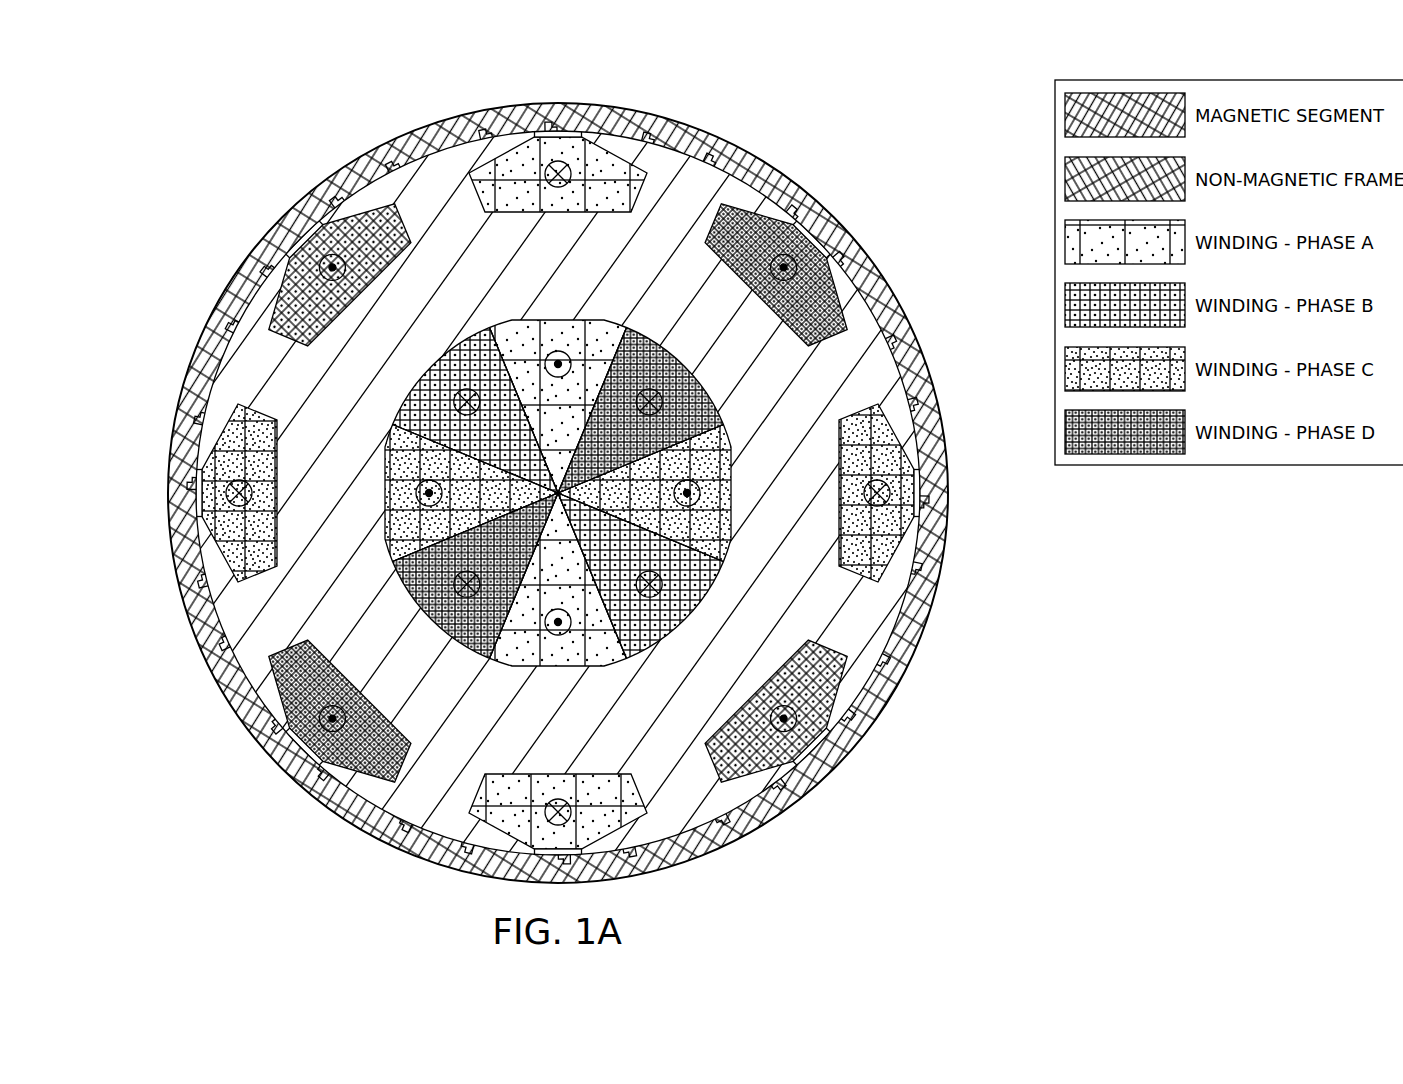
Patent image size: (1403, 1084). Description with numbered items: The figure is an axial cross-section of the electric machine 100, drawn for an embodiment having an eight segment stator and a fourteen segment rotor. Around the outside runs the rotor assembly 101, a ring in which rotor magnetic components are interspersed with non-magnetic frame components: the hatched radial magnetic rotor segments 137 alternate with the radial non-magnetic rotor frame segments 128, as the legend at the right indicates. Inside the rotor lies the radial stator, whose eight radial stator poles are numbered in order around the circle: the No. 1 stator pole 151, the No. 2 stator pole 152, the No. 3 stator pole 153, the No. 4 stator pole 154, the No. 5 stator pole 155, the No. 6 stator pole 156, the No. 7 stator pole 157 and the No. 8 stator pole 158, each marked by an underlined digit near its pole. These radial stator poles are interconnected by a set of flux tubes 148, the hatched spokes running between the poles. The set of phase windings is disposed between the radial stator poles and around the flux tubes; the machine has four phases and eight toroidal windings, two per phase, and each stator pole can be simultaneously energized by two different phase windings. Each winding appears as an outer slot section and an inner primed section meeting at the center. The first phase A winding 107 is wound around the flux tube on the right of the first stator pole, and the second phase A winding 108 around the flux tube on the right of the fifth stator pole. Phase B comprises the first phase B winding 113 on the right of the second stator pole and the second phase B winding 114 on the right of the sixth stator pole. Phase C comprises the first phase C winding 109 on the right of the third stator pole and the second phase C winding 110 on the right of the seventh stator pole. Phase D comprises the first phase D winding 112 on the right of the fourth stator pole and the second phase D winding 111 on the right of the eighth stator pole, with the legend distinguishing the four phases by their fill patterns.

The electric machine 100 is at (300, 80).
The rotor assembly 101 is at (812, 800).
The winding A1-A1' 107 is at (583, 206).
The winding A2-A2' 108 is at (585, 668).
The winding C1-C1' 109 is at (384, 470).
The winding C2-C2' 110 is at (838, 458).
The winding D2-D2' 111 is at (698, 380).
The winding D1-D1' 112 is at (428, 635).
The winding B1-B1' 113 is at (393, 250).
The winding B2-B2' 114 is at (693, 603).
The radial non-magnetic rotor frame segments 128 is at (885, 689).
The radial magnetic rotor segments 137 is at (938, 458).
The flux tubes 148 is at (667, 167).
The No. 1 stator pole 151 is at (430, 196).
The No. 2 stator pole 152 is at (258, 372).
The No. 3 stator pole 153 is at (257, 613).
The No. 4 stator pole 154 is at (450, 790).
The No. 5 stator pole 155 is at (677, 803).
The No. 6 stator pole 156 is at (858, 610).
The No. 7 stator pole 157 is at (867, 375).
The No. 8 stator pole 158 is at (698, 217).
The stator pole segment 1 is at (485, 146).
The stator pole segment 2 is at (263, 282).
The stator pole segment 3 is at (226, 672).
The stator pole segment 4 is at (427, 838).
The stator pole segment 5 is at (633, 840).
The stator pole segment 6 is at (885, 548).
The stator pole segment 7 is at (892, 315).
The stator pole segment 8 is at (706, 152).